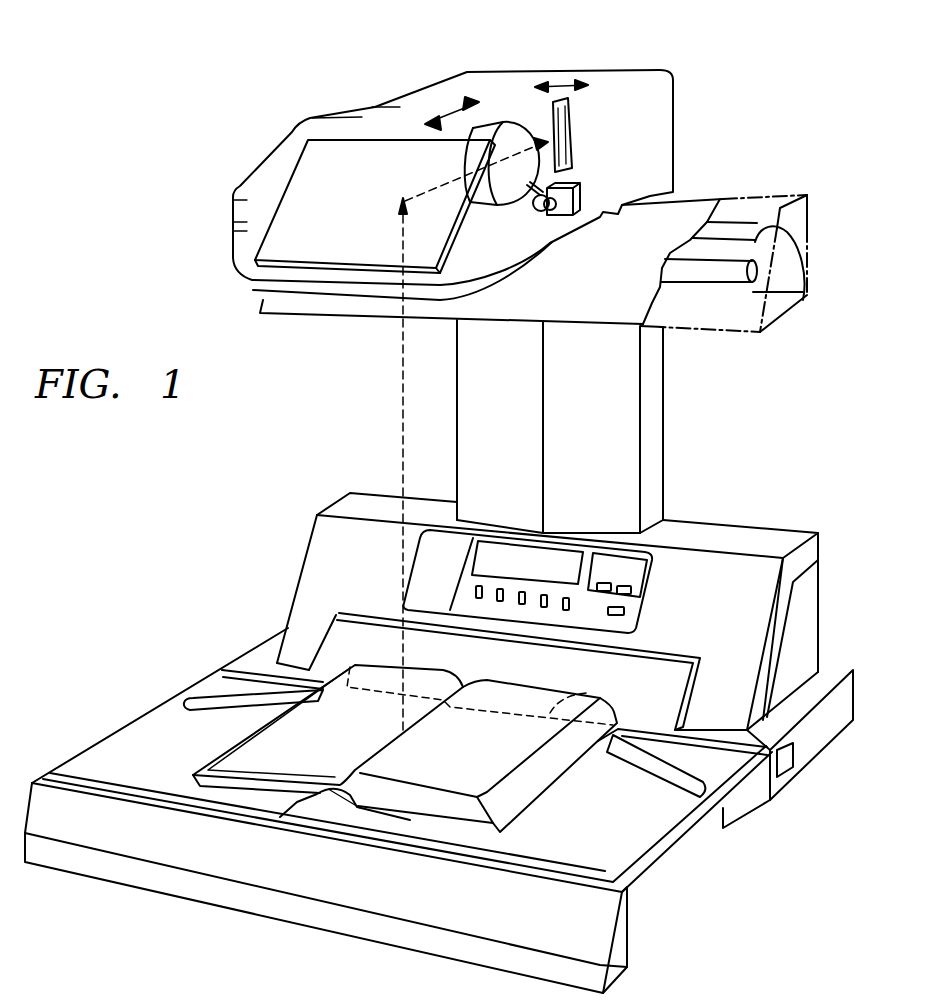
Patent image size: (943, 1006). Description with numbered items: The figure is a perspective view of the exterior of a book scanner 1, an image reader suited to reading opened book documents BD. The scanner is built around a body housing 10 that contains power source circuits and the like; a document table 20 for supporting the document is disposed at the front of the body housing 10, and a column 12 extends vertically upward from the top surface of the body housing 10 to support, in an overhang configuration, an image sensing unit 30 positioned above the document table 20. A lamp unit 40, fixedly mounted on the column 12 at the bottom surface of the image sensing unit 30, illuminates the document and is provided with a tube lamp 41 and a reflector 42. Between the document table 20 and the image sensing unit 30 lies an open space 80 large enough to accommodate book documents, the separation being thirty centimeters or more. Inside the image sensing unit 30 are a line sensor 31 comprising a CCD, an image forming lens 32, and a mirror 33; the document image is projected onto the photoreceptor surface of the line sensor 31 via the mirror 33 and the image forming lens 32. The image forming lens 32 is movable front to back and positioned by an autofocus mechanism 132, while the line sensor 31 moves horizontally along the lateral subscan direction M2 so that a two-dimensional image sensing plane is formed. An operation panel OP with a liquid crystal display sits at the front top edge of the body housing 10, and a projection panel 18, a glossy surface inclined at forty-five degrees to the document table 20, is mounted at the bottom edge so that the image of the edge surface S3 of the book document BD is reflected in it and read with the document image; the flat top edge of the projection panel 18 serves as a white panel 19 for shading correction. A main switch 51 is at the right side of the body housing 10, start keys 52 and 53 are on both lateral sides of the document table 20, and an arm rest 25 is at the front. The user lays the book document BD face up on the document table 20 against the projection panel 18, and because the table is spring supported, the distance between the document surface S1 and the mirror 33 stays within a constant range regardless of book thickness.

The book scanner 1 is at (152, 50).
The image sensing unit 30 is at (277, 150).
The mirror 33 is at (356, 213).
The image forming lens 32 is at (503, 125).
The lateral direction (subscan direction) M2 is at (560, 83).
The line sensor 31 is at (570, 135).
The autofocus mechanism (lens drive unit) 132 is at (580, 200).
The lamp unit 40 is at (809, 217).
The reflector 42 is at (803, 265).
The tube lamp 41 is at (753, 272).
The column 12 is at (660, 427).
The open space 80 is at (320, 428).
The body housing 10 is at (810, 625).
The operation panel OP is at (650, 590).
The projection panel 18 is at (325, 650).
The white panel 19 is at (370, 613).
The document table 20 is at (618, 831).
The arm rest 25 is at (293, 883).
The start key 52 is at (190, 698).
The start key 53 is at (712, 782).
The main switch 51 is at (787, 763).
The document surface S1 is at (478, 761).
The edge surface S3 is at (587, 694).
The book document BD is at (247, 740).